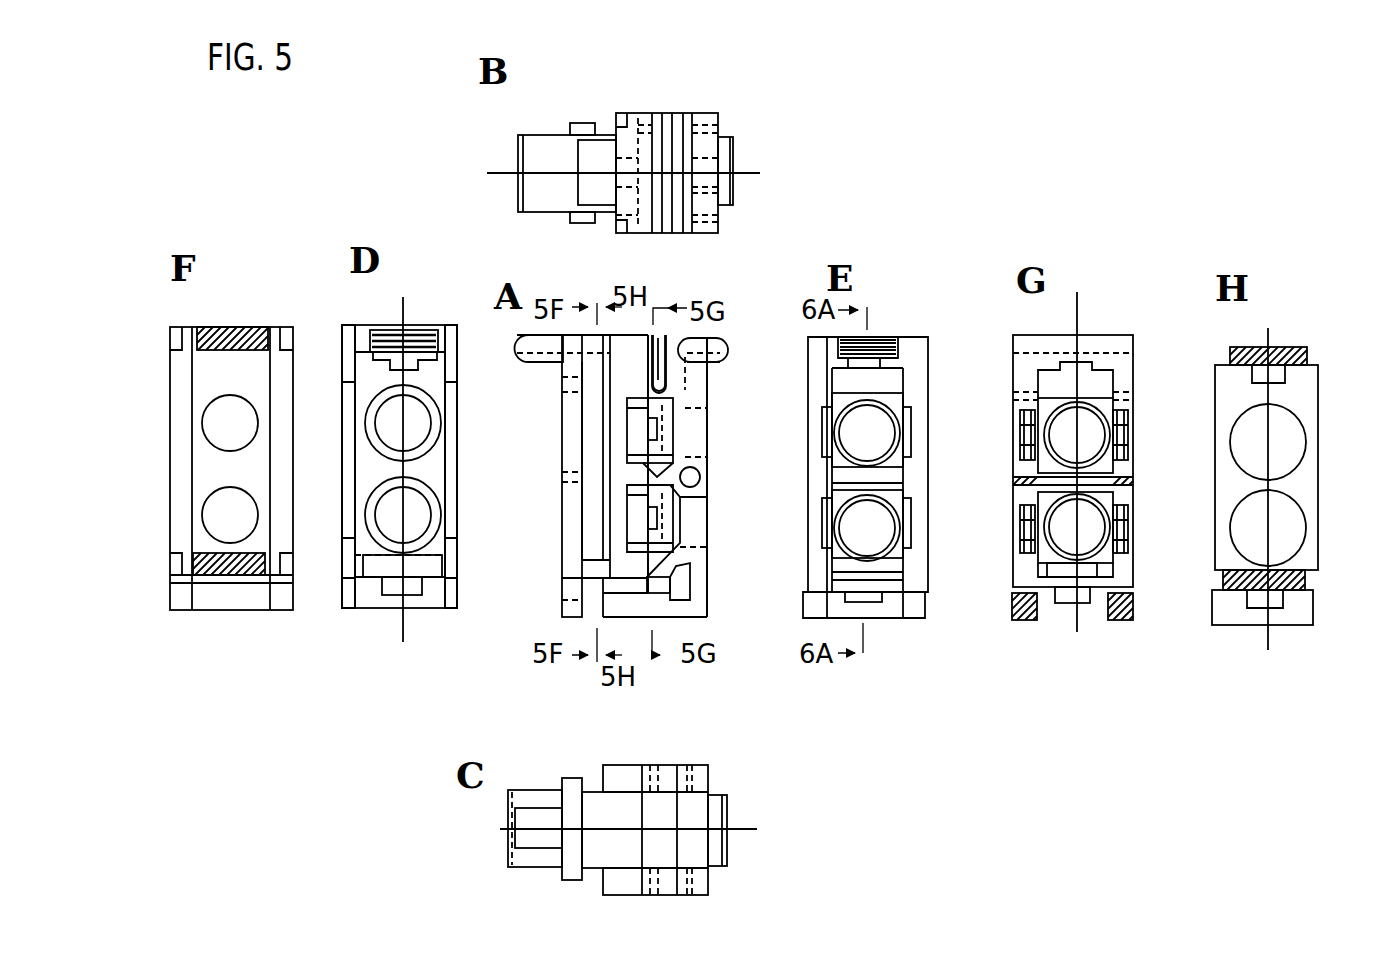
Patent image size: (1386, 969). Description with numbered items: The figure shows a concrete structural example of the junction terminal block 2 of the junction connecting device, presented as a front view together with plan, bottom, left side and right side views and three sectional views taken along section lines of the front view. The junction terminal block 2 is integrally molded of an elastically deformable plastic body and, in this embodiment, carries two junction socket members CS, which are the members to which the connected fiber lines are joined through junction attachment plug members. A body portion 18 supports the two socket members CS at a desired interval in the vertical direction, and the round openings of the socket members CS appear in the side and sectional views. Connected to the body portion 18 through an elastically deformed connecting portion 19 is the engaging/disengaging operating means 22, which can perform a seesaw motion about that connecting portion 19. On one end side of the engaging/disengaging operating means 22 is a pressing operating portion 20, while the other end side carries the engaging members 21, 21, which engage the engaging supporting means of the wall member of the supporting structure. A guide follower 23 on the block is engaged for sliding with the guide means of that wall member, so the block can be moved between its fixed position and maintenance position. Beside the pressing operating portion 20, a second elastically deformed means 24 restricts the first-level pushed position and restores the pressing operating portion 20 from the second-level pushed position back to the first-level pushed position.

The junction terminal block 2 is at (653, 111).
The body portion 18 is at (562, 432).
The elastically deformed connecting portion 19 is at (657, 477).
The pressing operating portion 20 is at (738, 150).
The engaging member 21 is at (1018, 620).
The engaging/disengaging operating means 22 is at (712, 521).
The guide follower 23 is at (583, 123).
The second elastically deformed means 24 is at (665, 377).
The junction socket member CS is at (387, 527).